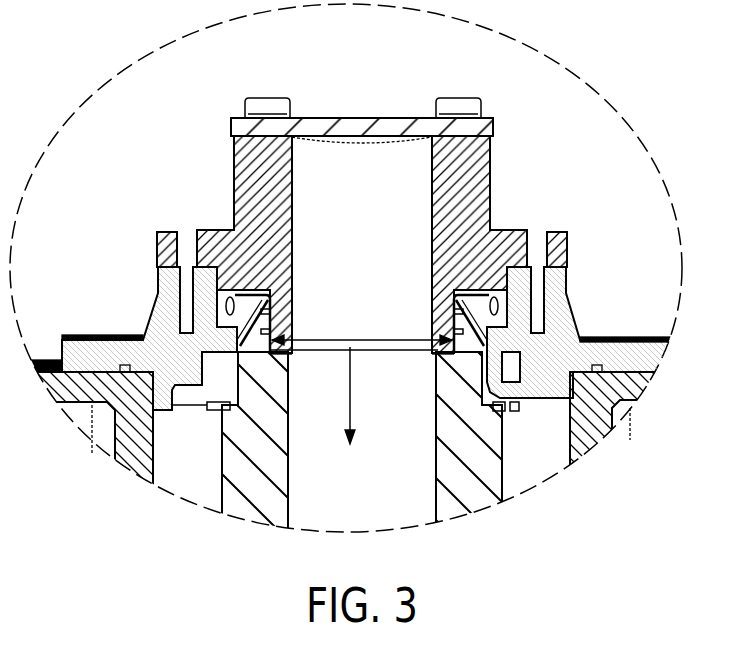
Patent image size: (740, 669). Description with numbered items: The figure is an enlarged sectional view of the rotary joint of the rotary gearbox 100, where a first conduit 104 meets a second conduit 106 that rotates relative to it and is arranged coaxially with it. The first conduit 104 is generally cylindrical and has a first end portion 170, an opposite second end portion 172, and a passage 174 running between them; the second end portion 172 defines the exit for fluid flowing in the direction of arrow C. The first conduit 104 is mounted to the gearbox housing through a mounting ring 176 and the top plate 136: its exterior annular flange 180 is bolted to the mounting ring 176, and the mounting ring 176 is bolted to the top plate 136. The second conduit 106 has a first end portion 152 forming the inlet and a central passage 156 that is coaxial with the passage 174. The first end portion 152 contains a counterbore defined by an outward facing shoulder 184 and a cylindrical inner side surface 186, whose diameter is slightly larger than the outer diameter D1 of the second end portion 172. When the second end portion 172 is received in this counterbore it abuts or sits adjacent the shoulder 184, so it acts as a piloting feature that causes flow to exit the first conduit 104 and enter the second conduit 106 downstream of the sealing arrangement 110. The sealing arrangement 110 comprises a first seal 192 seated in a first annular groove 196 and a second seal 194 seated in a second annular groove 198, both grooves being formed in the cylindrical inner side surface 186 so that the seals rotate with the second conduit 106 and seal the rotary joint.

The rotary gearbox 100 is at (346, 268).
The first conduit 104 is at (369, 244).
The second conduit 106 is at (382, 450).
The sealing arrangement 110 is at (137, 337).
The top plate 136 is at (645, 452).
The first end portion 152 is at (591, 330).
The central passage 156 is at (354, 433).
The first end portion 170 is at (386, 128).
The second end portion 172 is at (362, 391).
The passage 174 is at (362, 158).
The mounting ring 176 is at (88, 421).
The annular flange 180 is at (329, 241).
The shoulder 184 is at (362, 362).
The cylindrical inner side surface 186 is at (362, 272).
The first seal 192 is at (362, 317).
The second seal 194 is at (362, 286).
The first annular groove 196 is at (362, 307).
The second annular groove 198 is at (362, 290).
The flow direction arrow C is at (341, 416).
The outer diameter D1 is at (362, 376).